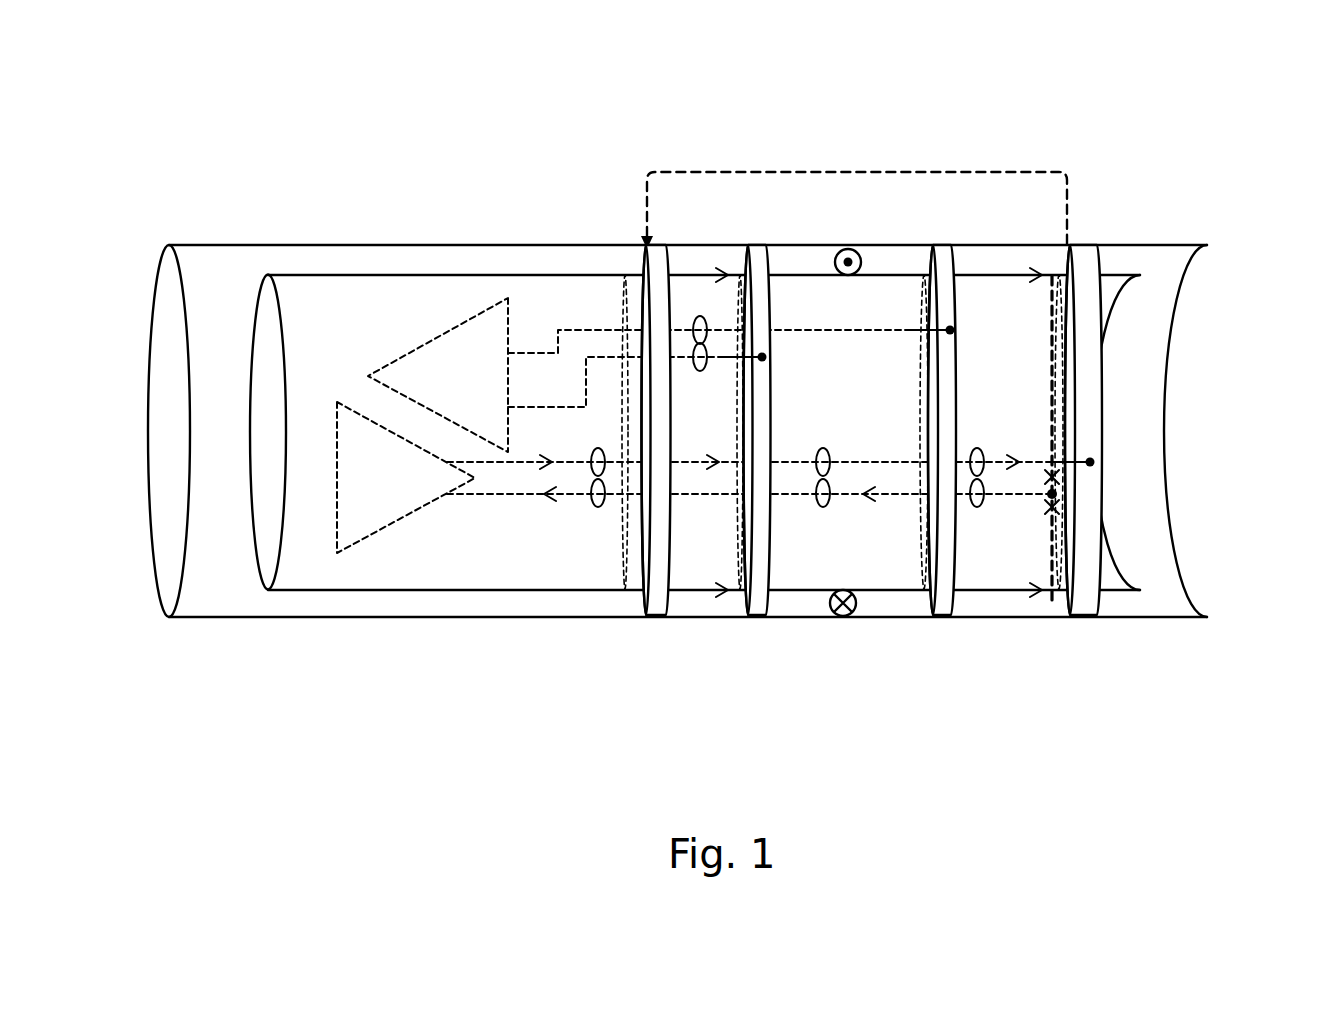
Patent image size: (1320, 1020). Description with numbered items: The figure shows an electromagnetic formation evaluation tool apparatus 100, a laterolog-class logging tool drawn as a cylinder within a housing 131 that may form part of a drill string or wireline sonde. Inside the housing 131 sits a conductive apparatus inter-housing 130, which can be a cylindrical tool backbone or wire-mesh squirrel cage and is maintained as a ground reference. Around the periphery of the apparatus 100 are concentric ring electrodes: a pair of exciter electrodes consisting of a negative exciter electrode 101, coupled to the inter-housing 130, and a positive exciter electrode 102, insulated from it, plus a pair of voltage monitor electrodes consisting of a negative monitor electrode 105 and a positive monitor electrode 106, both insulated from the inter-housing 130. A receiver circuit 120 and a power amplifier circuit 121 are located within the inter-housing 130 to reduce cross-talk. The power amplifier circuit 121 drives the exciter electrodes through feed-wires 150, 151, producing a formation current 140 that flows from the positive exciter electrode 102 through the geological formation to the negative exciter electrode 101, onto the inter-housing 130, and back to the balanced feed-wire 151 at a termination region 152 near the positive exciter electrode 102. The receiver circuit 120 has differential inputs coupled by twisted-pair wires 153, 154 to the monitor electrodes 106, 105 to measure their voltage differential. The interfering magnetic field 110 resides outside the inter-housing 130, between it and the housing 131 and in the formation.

The electromagnetic formation evaluation tool apparatus 100 is at (722, 398).
The negative exciter electrode 101 is at (650, 617).
The positive exciter electrode 102 is at (1080, 617).
The negative monitor electrode 105 is at (759, 617).
The positive monitor electrode 106 is at (940, 617).
The magnetic field 110 is at (861, 255).
The receiver circuit 120 is at (457, 327).
The power amplifier circuit 121 is at (345, 403).
The apparatus inter-housing 130 is at (1173, 315).
The housing 131 is at (1135, 245).
The formation current 140 is at (1058, 177).
The feed-wire 150 is at (866, 462).
The feed-wire 151 is at (887, 497).
The termination region 152 is at (1048, 494).
The wire 153 is at (800, 330).
The wire 154 is at (718, 358).